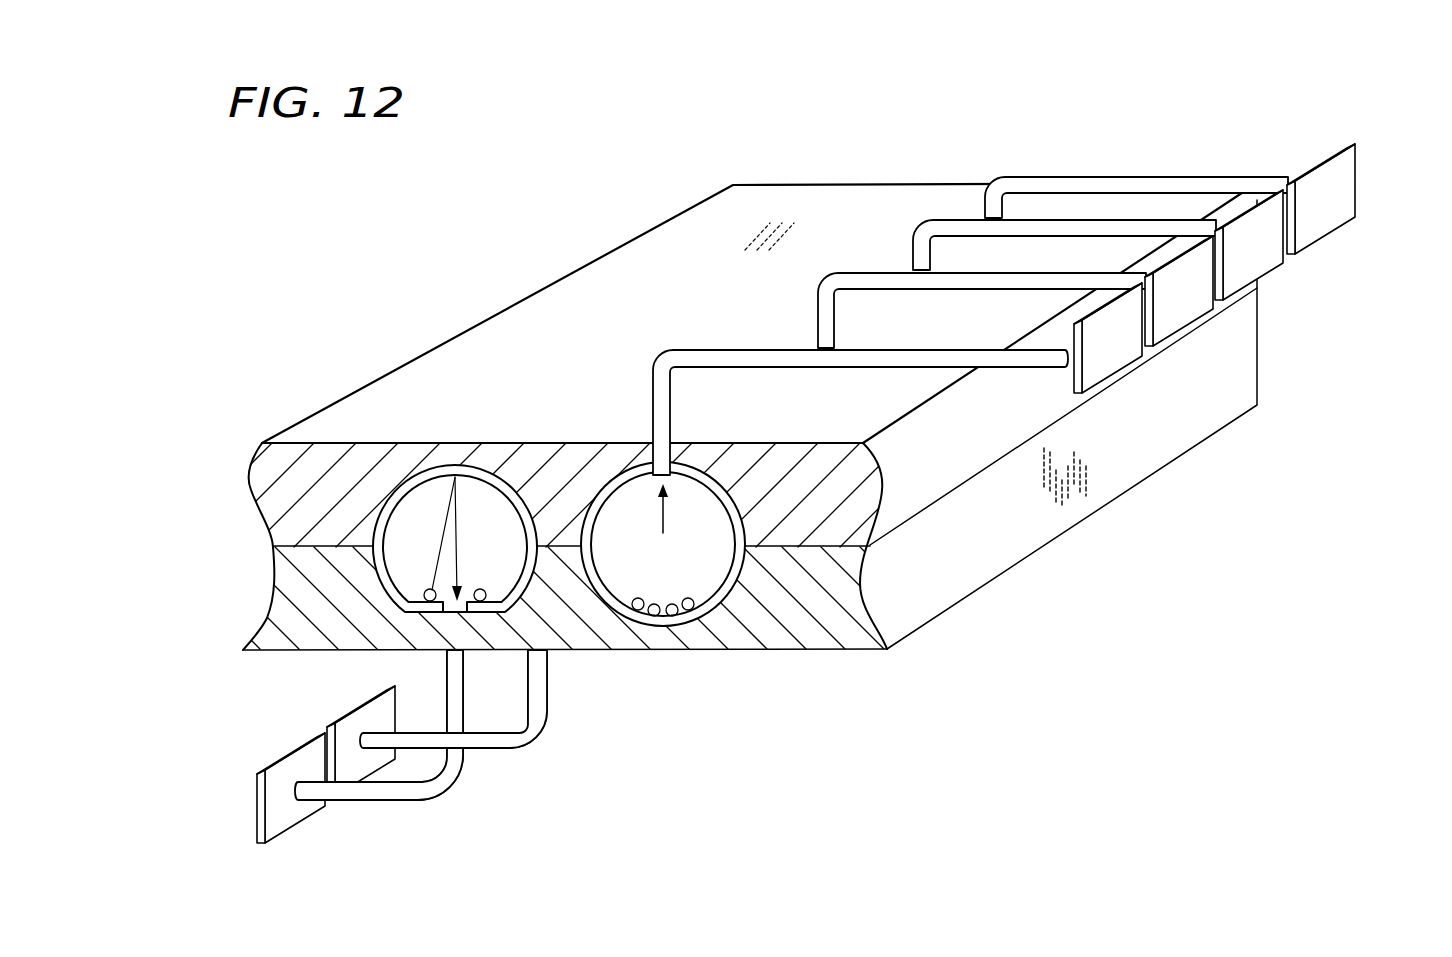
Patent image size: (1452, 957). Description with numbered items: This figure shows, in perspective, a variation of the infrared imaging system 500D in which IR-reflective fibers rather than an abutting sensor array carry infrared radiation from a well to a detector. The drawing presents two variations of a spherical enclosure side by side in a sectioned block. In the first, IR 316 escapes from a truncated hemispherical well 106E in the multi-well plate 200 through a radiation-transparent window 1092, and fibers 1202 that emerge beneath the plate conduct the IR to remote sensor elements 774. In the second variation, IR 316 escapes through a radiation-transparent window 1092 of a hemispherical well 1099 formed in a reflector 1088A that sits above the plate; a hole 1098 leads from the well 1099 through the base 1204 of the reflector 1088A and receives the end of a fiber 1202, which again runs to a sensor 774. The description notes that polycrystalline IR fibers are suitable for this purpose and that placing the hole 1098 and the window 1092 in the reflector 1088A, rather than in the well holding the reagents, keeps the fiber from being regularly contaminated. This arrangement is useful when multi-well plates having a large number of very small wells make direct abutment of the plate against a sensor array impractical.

The optical sensing assembly 500D is at (779, 513).
The reflector 1088A is at (552, 465).
The multi-well plate 200 is at (560, 633).
The base 1204 is at (550, 460).
The radiation-transparent window 1092 is at (443, 629).
The IR 316 is at (458, 552).
The truncated hemispherical well 106E is at (521, 606).
The hole 1098 is at (650, 448).
The hemispherical well 1099 is at (707, 465).
The fibers 1202 is at (791, 530).
The sensor elements 774 is at (1327, 193).